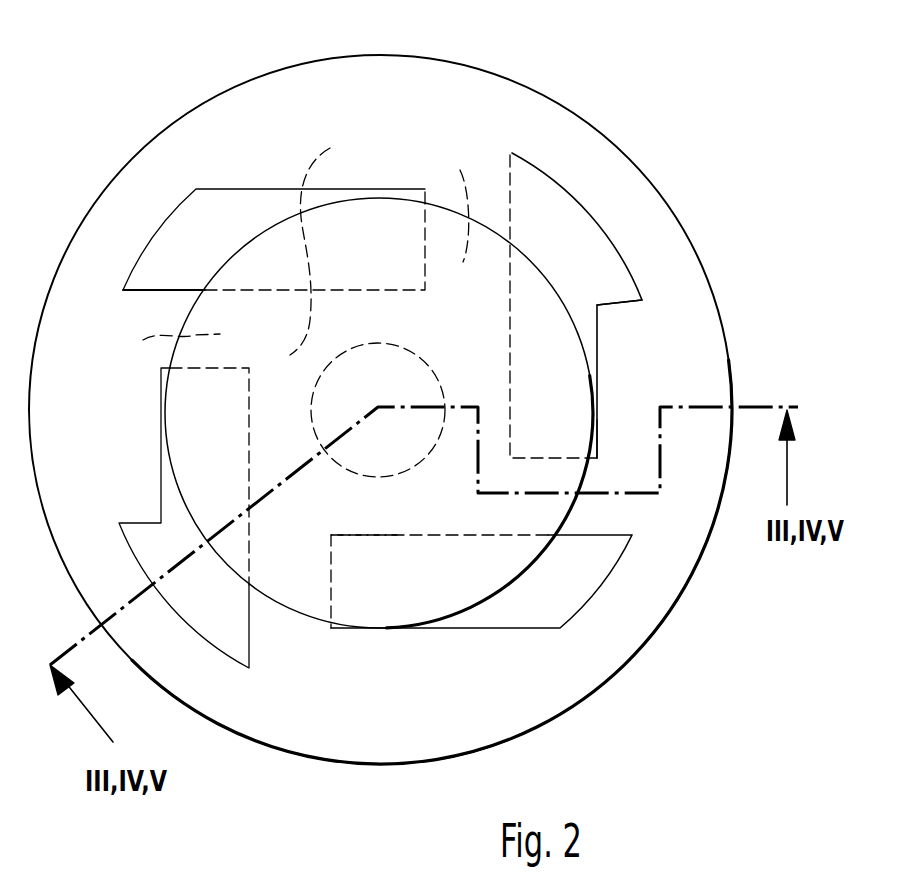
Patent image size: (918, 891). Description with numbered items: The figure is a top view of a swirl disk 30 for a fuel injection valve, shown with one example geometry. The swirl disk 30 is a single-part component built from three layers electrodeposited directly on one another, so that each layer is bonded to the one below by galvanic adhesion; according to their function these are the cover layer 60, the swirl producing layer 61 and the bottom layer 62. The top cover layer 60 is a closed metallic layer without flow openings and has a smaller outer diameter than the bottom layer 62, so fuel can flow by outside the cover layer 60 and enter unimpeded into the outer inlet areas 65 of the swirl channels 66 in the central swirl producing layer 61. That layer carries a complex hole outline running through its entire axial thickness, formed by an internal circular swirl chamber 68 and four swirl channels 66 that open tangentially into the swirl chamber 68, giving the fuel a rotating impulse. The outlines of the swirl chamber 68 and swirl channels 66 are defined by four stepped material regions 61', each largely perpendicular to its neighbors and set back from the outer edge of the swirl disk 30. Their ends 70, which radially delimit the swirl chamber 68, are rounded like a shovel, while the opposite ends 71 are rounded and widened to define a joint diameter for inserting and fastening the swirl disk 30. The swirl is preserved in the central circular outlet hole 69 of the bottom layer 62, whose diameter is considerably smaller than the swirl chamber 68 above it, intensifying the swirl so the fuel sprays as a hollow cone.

The swirl disk 30 is at (172, 120).
The cover layer 60 is at (310, 600).
The swirl producing layer 61 is at (578, 265).
The material regions 61' is at (662, 229).
The bottom layer 62 is at (643, 617).
The outer inlet areas 65 is at (598, 483).
The swirl channels 66 is at (302, 254).
The swirl chamber 68 is at (274, 243).
The outlet hole 69 is at (403, 385).
The ends of material regions 70 is at (331, 547).
The ends of material regions 71 is at (555, 618).